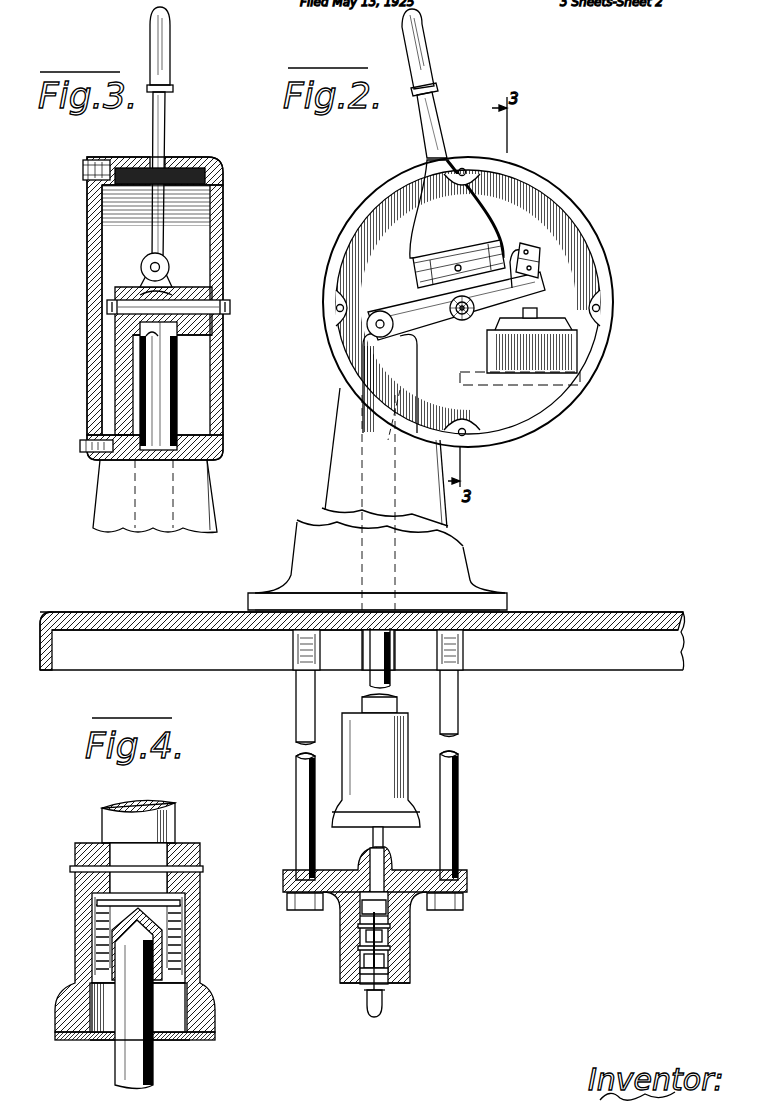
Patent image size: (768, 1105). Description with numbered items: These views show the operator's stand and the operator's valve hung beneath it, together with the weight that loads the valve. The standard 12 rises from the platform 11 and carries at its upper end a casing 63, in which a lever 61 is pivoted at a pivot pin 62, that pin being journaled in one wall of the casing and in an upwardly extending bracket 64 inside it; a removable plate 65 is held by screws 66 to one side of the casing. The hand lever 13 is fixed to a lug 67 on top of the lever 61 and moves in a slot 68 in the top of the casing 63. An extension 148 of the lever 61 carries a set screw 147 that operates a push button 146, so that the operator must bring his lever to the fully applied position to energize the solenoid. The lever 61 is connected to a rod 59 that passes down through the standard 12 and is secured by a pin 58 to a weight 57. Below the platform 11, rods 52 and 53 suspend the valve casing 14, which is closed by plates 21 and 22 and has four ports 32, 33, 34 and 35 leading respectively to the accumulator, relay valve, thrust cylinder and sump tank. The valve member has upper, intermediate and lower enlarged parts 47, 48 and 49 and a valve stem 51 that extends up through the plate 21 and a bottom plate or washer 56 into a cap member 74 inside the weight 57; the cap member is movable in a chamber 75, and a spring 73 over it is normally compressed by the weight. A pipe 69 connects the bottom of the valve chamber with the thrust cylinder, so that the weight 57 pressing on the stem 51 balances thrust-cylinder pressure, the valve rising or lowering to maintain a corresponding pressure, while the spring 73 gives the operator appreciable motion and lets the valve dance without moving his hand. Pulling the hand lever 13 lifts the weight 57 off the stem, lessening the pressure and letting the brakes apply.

In FIG. 2, the platform 11 is at (592, 612).
In FIG. 3, the standard 12 is at (196, 508).
In FIG. 2, the standard 12 is at (448, 516).
In FIG. 3, the hand lever 13 is at (167, 114).
In FIG. 2, the hand lever 13 is at (444, 98).
In FIG. 2, the valve casing 14 is at (388, 956).
In FIG. 2, the top plate 21 is at (418, 872).
In FIG. 2, the bottom plate 22 is at (400, 986).
In FIG. 2, the port 32 is at (356, 960).
In FIG. 2, the port 33 is at (358, 944).
In FIG. 2, the port 34 is at (358, 922).
In FIG. 2, the port 35 is at (358, 912).
In FIG. 2, the upper enlarged part 47 is at (388, 910).
In FIG. 2, the intermediate enlarged part 48 is at (388, 932).
In FIG. 2, the lower enlarged part 49 is at (396, 974).
In FIG. 2, the valve stem 51 is at (382, 837).
In FIG. 4, the valve stem 51 is at (152, 1058).
In FIG. 2, the rod 52 is at (462, 791).
In FIG. 2, the rod 53 is at (296, 789).
In FIG. 4, the bottom plate or washer 56 is at (92, 1042).
In FIG. 2, the weight 57 is at (408, 755).
In FIG. 4, the weight 57 is at (78, 942).
In FIG. 4, the pin 58 is at (70, 868).
In FIG. 3, the rod 59 is at (182, 399).
In FIG. 2, the rod 59 is at (370, 678).
In FIG. 4, the rod 59 is at (156, 804).
In FIG. 3, the lever 61 is at (159, 287).
In FIG. 2, the lever 61 is at (392, 304).
In FIG. 3, the pivot pin 62 is at (216, 302).
In FIG. 2, the pivot pin 62 is at (462, 314).
In FIG. 3, the casing 63 is at (223, 231).
In FIG. 2, the casing 63 is at (593, 214).
In FIG. 3, the bracket 64 is at (124, 340).
In FIG. 2, the bracket 64 is at (456, 334).
In FIG. 3, the removable plate 65 is at (98, 288).
In FIG. 3, the screws 66 is at (80, 446).
In FIG. 3, the lug 67 is at (144, 285).
In FIG. 2, the lug 67 is at (419, 258).
In FIG. 3, the slot 68 is at (166, 152).
In FIG. 2, the pipe 69 is at (364, 1008).
In FIG. 4, the spring 73 is at (168, 926).
In FIG. 4, the cap member 74 is at (168, 972).
In FIG. 4, the chamber 75 is at (182, 999).
In FIG. 2, the push button 146 is at (535, 326).
In FIG. 2, the set screw 147 is at (530, 248).
In FIG. 2, the extension 148 is at (508, 248).